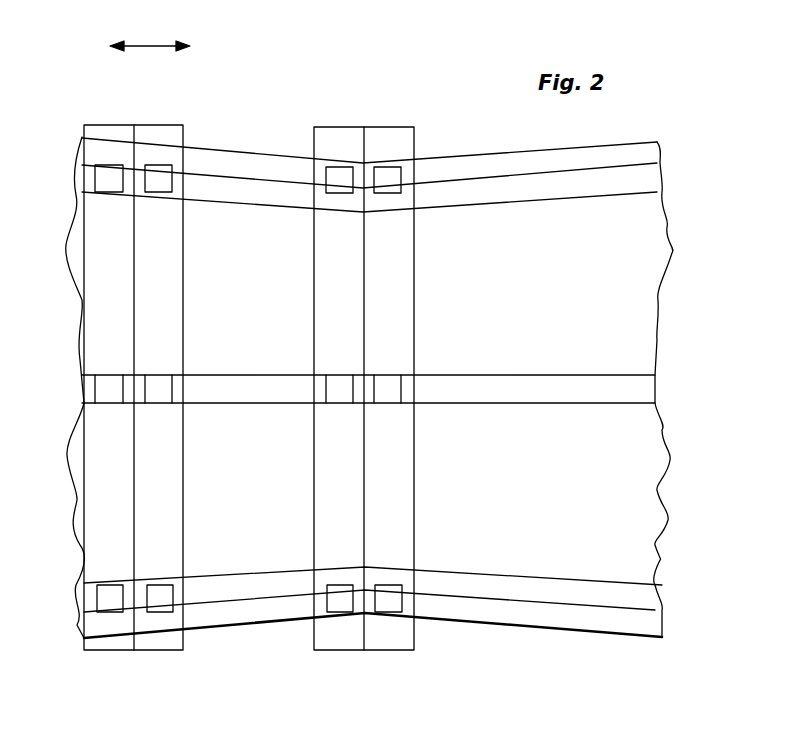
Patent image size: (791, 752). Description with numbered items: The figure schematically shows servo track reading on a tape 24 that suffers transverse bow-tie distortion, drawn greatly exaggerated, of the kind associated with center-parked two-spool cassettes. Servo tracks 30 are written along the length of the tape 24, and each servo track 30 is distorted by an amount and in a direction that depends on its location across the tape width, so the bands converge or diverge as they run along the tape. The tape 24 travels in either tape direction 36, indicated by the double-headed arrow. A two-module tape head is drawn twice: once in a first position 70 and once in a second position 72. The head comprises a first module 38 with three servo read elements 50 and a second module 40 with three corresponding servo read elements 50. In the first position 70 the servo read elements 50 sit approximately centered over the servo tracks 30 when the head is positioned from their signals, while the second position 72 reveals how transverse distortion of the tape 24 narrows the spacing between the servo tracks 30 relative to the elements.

The tape 24 is at (547, 627).
The servo track 30 is at (547, 200).
The tape direction 36 is at (157, 44).
The first module 38 is at (110, 125).
The second module 40 is at (170, 125).
The servo read elements 50 is at (107, 192).
The first position 70 is at (121, 676).
The second position 72 is at (339, 676).